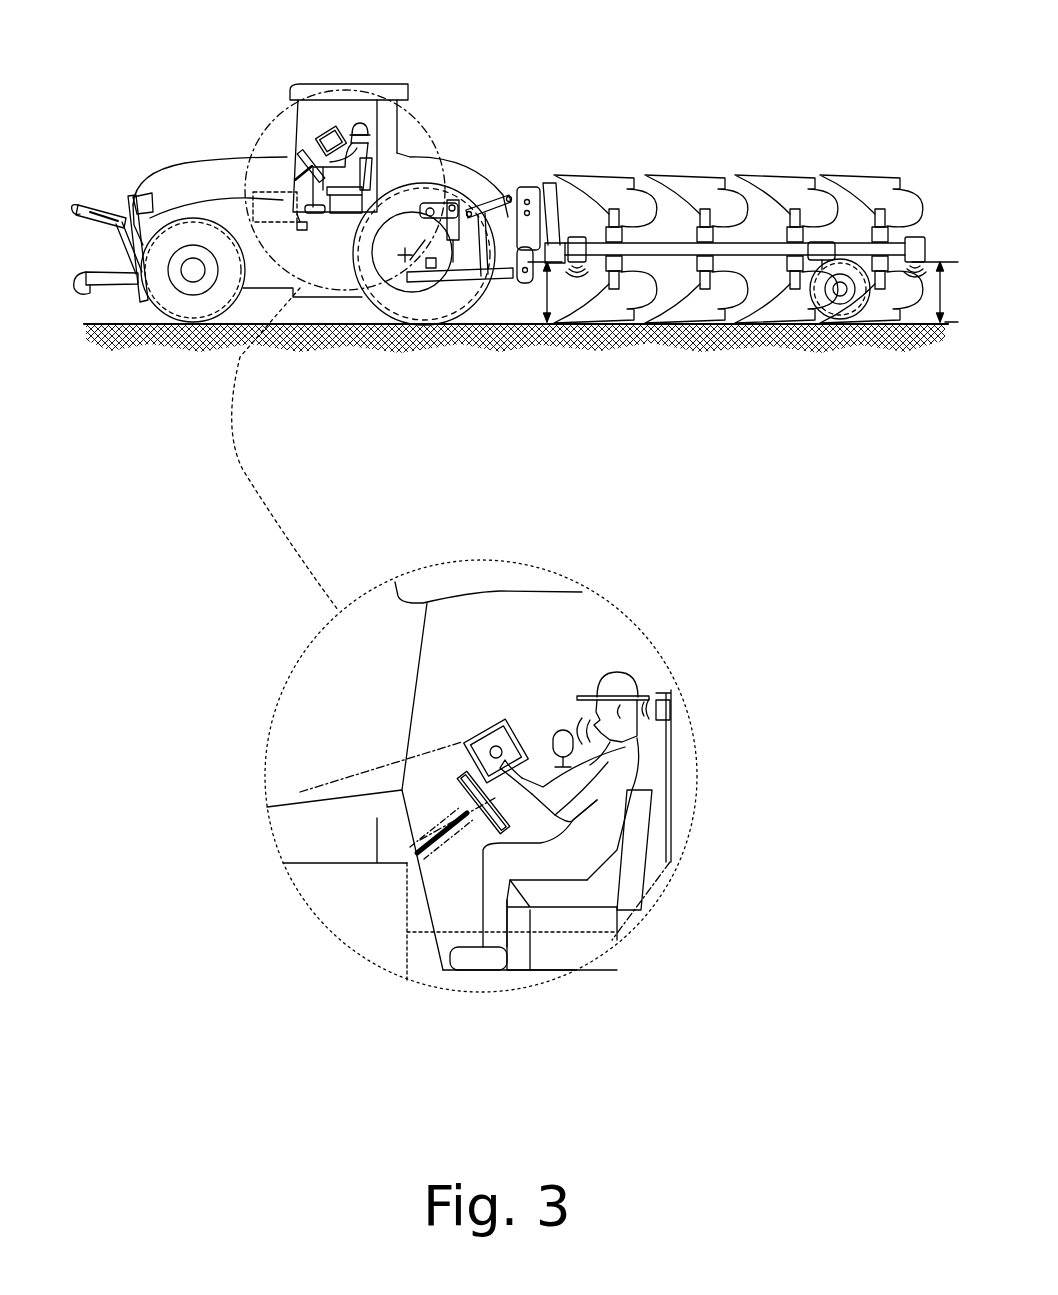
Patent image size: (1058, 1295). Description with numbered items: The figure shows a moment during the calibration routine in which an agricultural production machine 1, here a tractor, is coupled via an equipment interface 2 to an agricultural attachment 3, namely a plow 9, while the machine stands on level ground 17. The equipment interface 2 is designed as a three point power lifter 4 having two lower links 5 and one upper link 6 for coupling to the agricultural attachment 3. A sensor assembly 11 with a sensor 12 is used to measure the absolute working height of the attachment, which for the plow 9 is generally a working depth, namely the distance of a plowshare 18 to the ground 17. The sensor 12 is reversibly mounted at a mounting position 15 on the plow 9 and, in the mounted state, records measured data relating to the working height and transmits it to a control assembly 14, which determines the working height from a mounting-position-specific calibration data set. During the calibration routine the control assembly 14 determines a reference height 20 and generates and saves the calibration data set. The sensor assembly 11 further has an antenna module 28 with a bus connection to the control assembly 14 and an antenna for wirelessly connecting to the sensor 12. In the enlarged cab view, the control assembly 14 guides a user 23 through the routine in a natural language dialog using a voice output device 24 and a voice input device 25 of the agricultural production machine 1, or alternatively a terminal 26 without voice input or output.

The agricultural production machine 1 is at (222, 165).
The equipment interface 2 is at (316, 200).
The agricultural attachment 3 is at (735, 200).
The three point power lifter 4 is at (68, 172).
The lower links 5 is at (120, 287).
The upper link 6 is at (103, 208).
The plow 9 is at (747, 253).
The sensor assembly 11 is at (735, 368).
The sensor 12 is at (596, 240).
The control assembly 14 is at (291, 192).
The mounting position 15 is at (575, 230).
The ground 17 is at (107, 352).
The plowshare 18 is at (753, 170).
The reference height 20 is at (533, 325).
The user 23 is at (358, 121).
The voice output device 24 is at (672, 700).
The voice input device 25 is at (563, 728).
The terminal 26 is at (326, 128).
The antenna module 28 is at (267, 192).